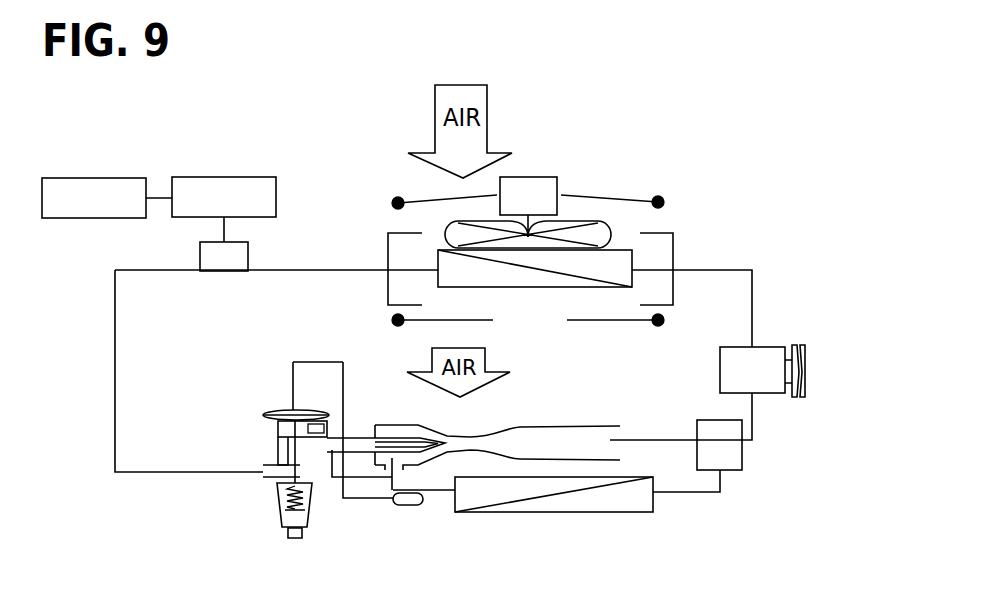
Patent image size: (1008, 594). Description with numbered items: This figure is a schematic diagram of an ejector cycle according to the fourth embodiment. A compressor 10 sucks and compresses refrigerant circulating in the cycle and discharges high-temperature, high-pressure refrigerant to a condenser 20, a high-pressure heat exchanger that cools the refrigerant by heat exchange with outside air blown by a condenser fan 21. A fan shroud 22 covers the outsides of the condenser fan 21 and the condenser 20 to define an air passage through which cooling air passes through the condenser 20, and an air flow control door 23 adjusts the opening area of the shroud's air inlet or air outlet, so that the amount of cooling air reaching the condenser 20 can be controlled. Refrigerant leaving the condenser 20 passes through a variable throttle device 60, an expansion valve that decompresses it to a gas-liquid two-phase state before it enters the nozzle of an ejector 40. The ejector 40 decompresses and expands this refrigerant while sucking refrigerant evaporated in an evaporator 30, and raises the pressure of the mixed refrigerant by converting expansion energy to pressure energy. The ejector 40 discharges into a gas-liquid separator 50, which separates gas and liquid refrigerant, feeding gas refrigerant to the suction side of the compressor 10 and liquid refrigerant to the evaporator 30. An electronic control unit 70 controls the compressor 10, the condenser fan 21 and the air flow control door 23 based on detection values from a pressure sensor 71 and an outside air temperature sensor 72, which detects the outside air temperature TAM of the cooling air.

The compressor 10 is at (765, 347).
The condenser 20 is at (588, 287).
The condenser fan 21 is at (577, 222).
The fan shroud 22 is at (673, 248).
The air flow control door 23 is at (438, 198).
The evaporator 30 is at (653, 500).
The ejector 40 is at (447, 429).
The gas-liquid separator 50 is at (742, 458).
The variable throttle device 60 is at (272, 407).
The electronic control unit 70 is at (242, 177).
The pressure sensor 71 is at (113, 177).
The outside air temperature sensor 72 is at (248, 256).